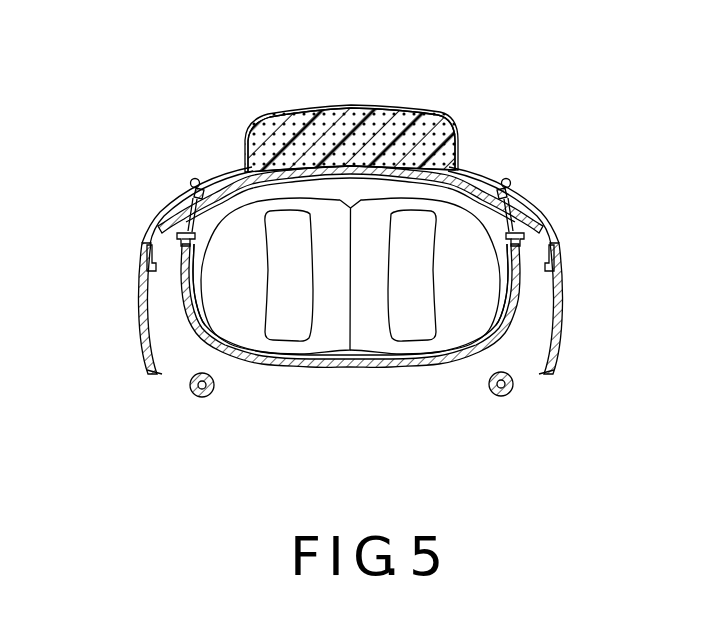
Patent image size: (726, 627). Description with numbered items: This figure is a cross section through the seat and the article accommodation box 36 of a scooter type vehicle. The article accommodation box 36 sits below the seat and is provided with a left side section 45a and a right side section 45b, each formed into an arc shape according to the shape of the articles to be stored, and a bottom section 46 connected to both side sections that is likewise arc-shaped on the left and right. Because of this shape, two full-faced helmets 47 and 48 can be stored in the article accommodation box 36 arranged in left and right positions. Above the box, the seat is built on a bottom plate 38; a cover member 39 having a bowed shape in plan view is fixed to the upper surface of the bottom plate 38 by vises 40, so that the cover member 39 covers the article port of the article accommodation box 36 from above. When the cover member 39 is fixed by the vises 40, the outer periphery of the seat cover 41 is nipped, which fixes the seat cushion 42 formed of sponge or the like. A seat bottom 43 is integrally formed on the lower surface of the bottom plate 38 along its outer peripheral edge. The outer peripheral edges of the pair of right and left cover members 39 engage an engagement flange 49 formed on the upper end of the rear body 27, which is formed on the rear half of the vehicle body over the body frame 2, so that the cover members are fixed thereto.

The body frame 2 is at (202, 398).
The rear body 27 is at (139, 315).
The article accommodation box 36 is at (293, 366).
The bottom plate 38 is at (292, 165).
The cover member 39 is at (166, 204).
The vise 40 is at (195, 178).
The seat cover 41 is at (338, 107).
The seat cushion 42 is at (388, 122).
The seat bottom 43 is at (176, 237).
The left side section 45a is at (195, 310).
The right side section 45b is at (507, 310).
The bottom section 46 is at (333, 358).
The full-faced helmet 47 is at (241, 315).
The full-faced helmet 48 is at (461, 315).
The engagement flange 49 is at (158, 270).